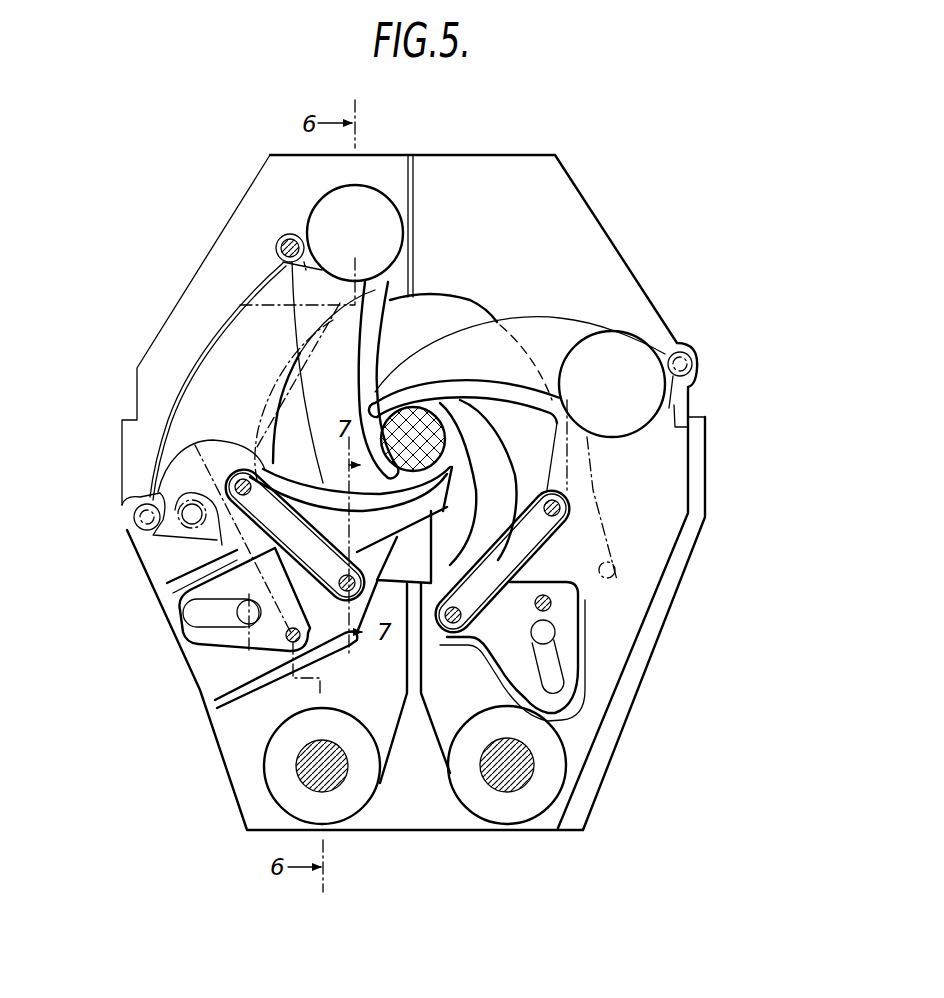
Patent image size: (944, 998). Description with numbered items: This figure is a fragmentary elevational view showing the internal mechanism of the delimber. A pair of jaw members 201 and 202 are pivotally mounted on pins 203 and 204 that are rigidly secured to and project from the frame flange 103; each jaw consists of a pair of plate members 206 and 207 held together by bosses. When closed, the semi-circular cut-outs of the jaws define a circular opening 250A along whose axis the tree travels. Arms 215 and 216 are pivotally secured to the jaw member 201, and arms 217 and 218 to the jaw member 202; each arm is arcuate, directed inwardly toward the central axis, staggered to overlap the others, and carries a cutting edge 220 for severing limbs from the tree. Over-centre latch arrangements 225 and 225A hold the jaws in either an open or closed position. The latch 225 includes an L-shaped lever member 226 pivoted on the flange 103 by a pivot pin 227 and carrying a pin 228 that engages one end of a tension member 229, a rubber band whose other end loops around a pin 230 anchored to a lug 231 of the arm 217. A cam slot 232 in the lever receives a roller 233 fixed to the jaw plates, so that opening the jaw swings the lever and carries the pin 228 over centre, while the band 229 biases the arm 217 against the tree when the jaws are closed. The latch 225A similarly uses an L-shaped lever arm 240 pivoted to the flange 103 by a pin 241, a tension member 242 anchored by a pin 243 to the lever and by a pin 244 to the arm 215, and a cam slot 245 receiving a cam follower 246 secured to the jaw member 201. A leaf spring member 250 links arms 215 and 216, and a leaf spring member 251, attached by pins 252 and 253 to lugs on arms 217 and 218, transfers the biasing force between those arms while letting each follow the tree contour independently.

The flange 103 is at (702, 430).
The jaw member 201 is at (600, 287).
The jaw member 202 is at (228, 252).
The pin 203 is at (540, 773).
The pin 204 is at (327, 777).
The plate member 206 is at (173, 572).
The plate member 207 is at (180, 592).
The delimber arm 215 is at (490, 463).
The delimber arm 216 is at (488, 338).
The delimber arm 217 is at (410, 517).
The delimber arm 218 is at (360, 334).
The cutting edge 220 is at (423, 400).
The over-centre latch arrangement 225 is at (207, 649).
The over-centre latch arrangement 225A is at (592, 633).
The L-shaped lever member 226 is at (175, 623).
The pivot pin 227 is at (293, 647).
The pin 228 is at (237, 473).
The tension member 229 is at (273, 503).
The pin 230 is at (357, 550).
The lug 231 is at (375, 565).
The cam slot 232 is at (177, 650).
The roller 233 is at (250, 624).
The L-shaped lever arm 240 is at (563, 630).
The pin 241 is at (549, 598).
The tension member 242 is at (567, 525).
The pin 243 is at (447, 643).
The pin 244 is at (563, 512).
The cam slot 245 is at (563, 688).
The cam follower 246 is at (547, 638).
The leaf spring member 250 is at (735, 420).
The circular opening 250A is at (470, 280).
The leaf spring member 251 is at (237, 310).
The pin 252 is at (147, 520).
The pin 253 is at (277, 243).